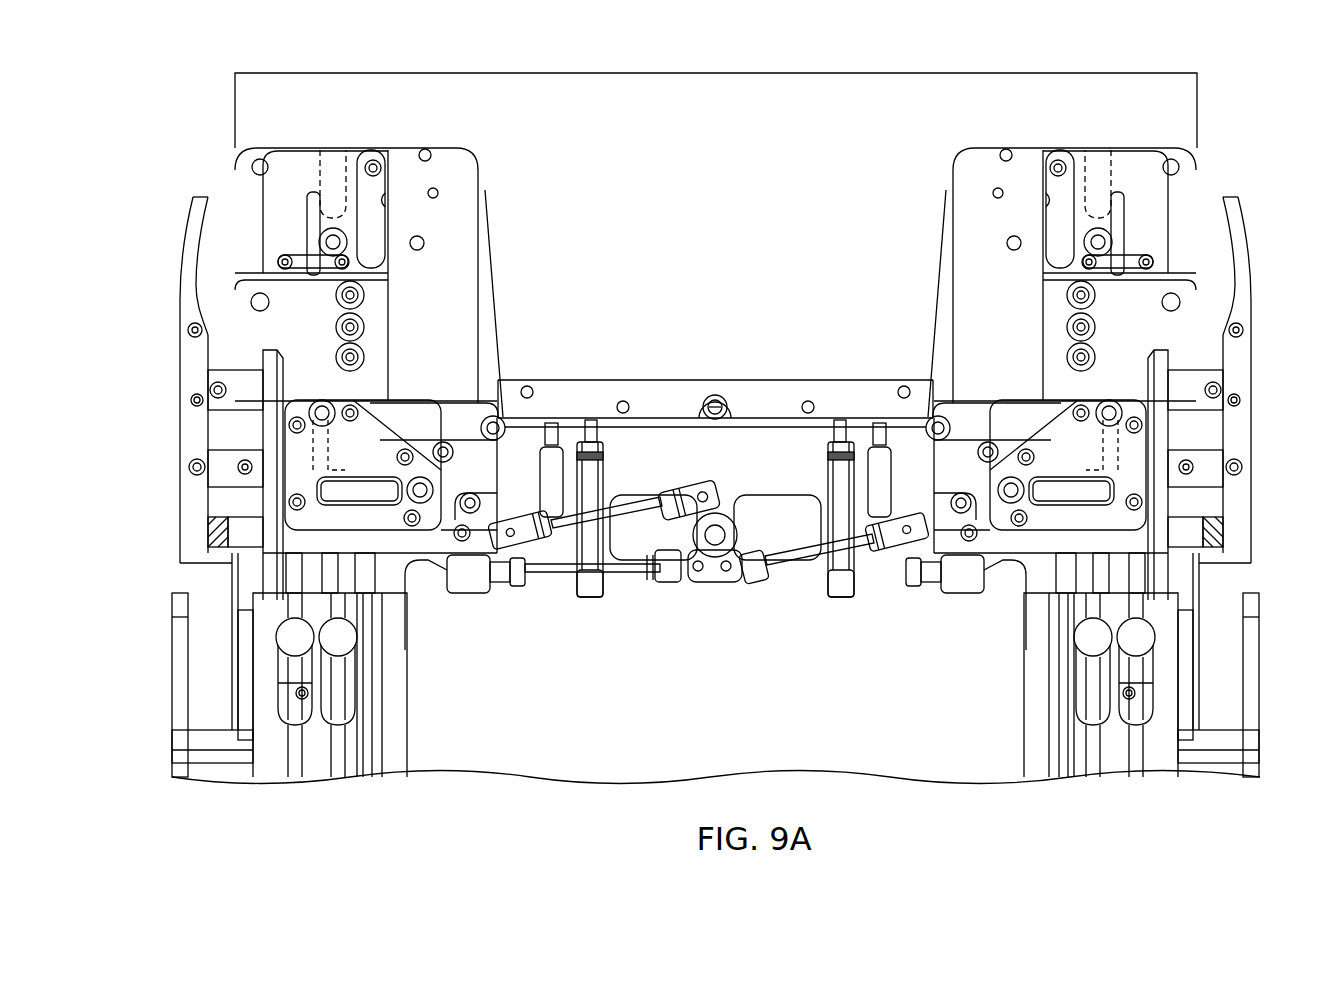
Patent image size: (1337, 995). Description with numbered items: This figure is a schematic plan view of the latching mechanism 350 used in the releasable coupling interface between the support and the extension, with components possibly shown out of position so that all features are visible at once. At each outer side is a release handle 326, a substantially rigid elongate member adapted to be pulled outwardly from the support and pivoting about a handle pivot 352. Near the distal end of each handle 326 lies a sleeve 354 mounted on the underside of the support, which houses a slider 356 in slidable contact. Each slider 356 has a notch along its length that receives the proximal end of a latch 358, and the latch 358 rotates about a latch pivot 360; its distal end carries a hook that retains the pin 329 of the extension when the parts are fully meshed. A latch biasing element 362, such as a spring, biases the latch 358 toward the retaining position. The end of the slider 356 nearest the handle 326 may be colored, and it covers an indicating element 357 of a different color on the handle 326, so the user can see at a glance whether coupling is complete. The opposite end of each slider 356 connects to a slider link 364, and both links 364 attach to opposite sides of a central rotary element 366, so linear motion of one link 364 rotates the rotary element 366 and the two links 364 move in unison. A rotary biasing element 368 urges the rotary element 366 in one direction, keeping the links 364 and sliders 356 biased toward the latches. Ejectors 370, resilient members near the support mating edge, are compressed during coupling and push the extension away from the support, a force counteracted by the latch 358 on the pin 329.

The latching mechanism 350 is at (1238, 85).
The release handle 326 is at (200, 197).
The pin 329 is at (333, 228).
The latch 358 is at (313, 195).
The latch pivot 360 is at (310, 408).
The latch biasing element 362 is at (332, 488).
The handle pivot 352 is at (190, 465).
The sleeve 354 is at (235, 540).
The slider 356 is at (1216, 528).
The indicating element 357 is at (215, 528).
The slider link 364 is at (553, 540).
The rotary element 366 is at (735, 562).
The rotary biasing element 368 is at (628, 575).
The ejector 370 is at (590, 430).